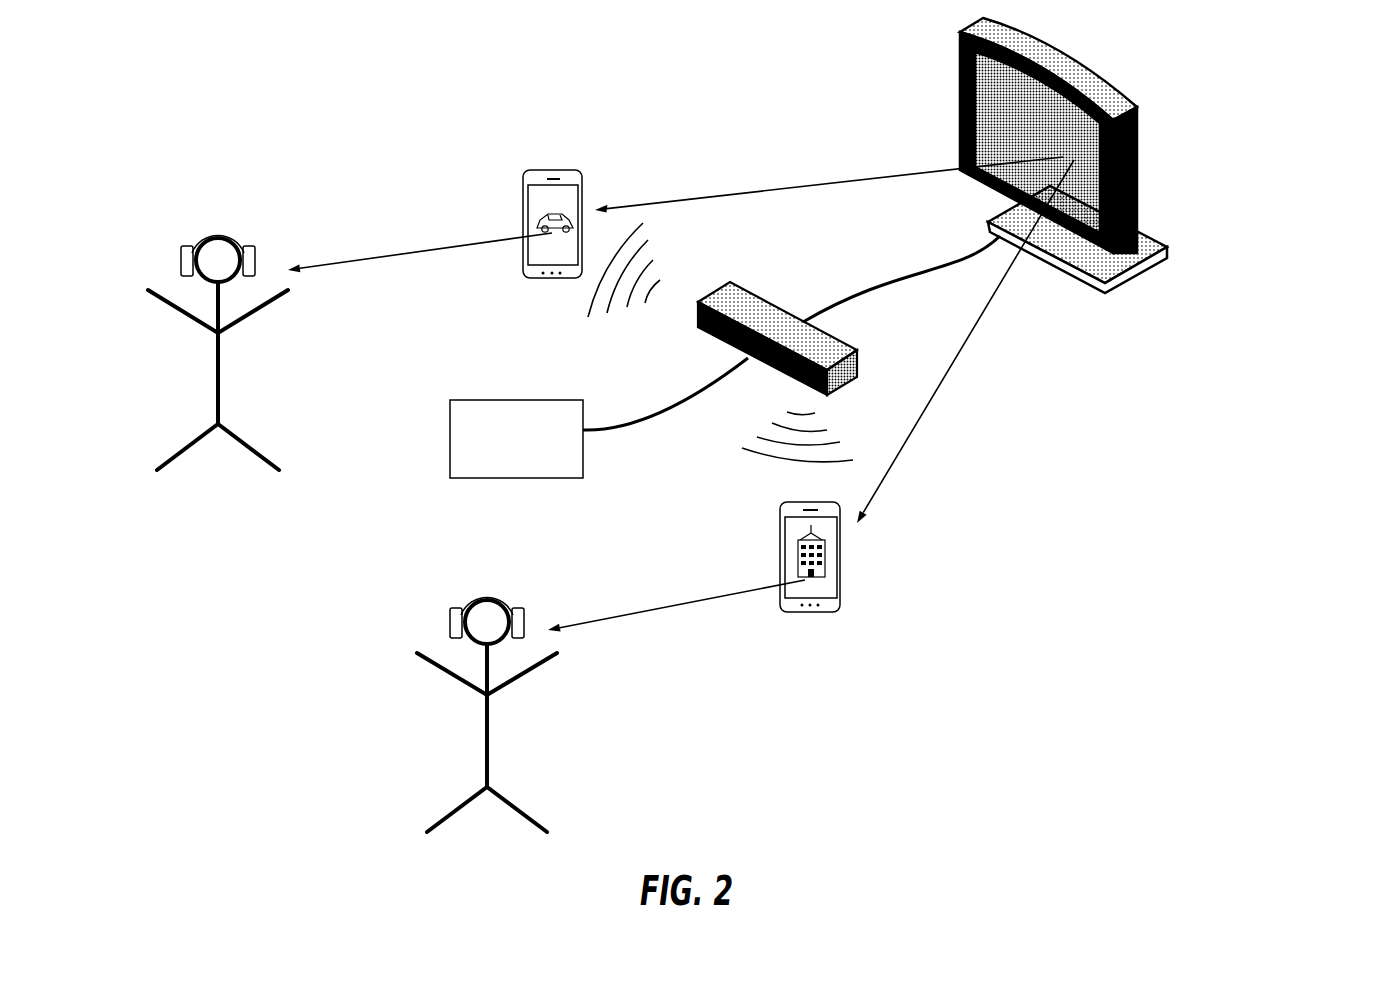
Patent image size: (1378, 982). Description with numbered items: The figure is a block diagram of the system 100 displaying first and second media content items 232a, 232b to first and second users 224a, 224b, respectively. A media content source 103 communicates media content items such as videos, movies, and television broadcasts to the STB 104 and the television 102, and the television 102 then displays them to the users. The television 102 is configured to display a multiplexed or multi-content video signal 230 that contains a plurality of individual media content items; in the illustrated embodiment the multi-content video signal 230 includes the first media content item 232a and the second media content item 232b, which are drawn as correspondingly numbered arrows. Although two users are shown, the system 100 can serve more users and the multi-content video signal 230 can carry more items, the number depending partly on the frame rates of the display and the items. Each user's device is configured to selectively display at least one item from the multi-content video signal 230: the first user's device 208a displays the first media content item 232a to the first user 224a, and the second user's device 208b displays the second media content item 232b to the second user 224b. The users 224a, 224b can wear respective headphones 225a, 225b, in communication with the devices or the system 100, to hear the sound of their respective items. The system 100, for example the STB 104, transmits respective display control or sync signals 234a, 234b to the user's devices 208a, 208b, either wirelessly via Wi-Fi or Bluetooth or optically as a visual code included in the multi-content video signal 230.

The system 100 is at (1281, 138).
The television 102 is at (1112, 98).
The media content source 103 is at (502, 449).
The STB 104 is at (752, 293).
The first user's device 208a is at (520, 183).
The second user's device 208b is at (840, 570).
The first user 224a is at (212, 362).
The second user 224b is at (483, 722).
The headphones 225a is at (217, 232).
The headphones 225b is at (485, 592).
The multi-content video signal 230 is at (772, 188).
The first media content item 232a is at (432, 250).
The second media content item 232b is at (638, 613).
The sync signal 234a is at (568, 325).
The sync signal 234b is at (732, 463).